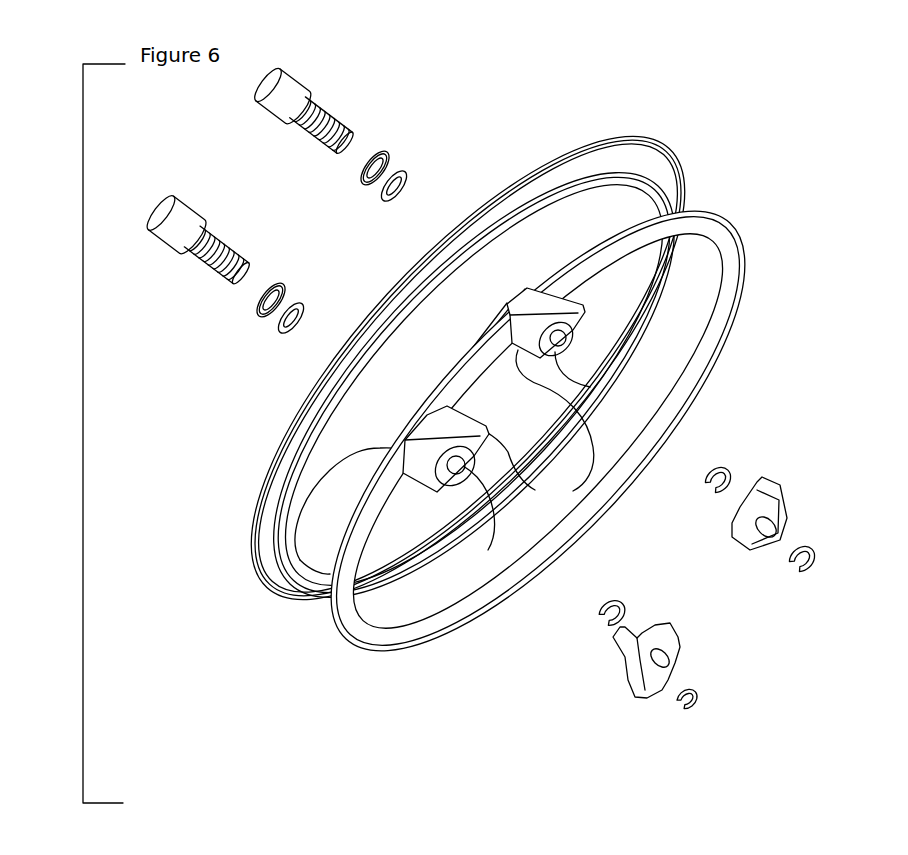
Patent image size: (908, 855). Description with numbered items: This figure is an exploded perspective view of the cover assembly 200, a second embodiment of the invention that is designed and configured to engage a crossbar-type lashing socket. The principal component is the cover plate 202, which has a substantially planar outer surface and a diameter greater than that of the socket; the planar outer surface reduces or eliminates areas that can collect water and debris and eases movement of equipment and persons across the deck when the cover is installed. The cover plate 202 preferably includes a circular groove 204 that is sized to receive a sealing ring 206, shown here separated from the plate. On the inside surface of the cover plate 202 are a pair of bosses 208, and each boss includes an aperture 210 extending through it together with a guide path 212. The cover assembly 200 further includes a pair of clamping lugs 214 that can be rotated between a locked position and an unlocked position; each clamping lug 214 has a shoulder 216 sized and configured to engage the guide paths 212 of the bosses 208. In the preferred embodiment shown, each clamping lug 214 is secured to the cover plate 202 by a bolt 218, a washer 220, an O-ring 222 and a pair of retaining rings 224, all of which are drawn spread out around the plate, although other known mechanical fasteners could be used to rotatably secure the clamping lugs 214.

The cover assembly 200 is at (83, 433).
The cover plate 202 is at (664, 140).
The circular groove 204 is at (664, 181).
The sealing ring 206 is at (737, 228).
The bosses 208 is at (496, 393).
The aperture 210 is at (590, 387).
The guide path 212 is at (575, 325).
The clamping lugs 214 is at (787, 491).
The shoulder 216 is at (642, 632).
The bolt 218 is at (310, 70).
The washer 220 is at (385, 150).
The O-ring 222 is at (414, 168).
The retaining rings 224 is at (733, 463).